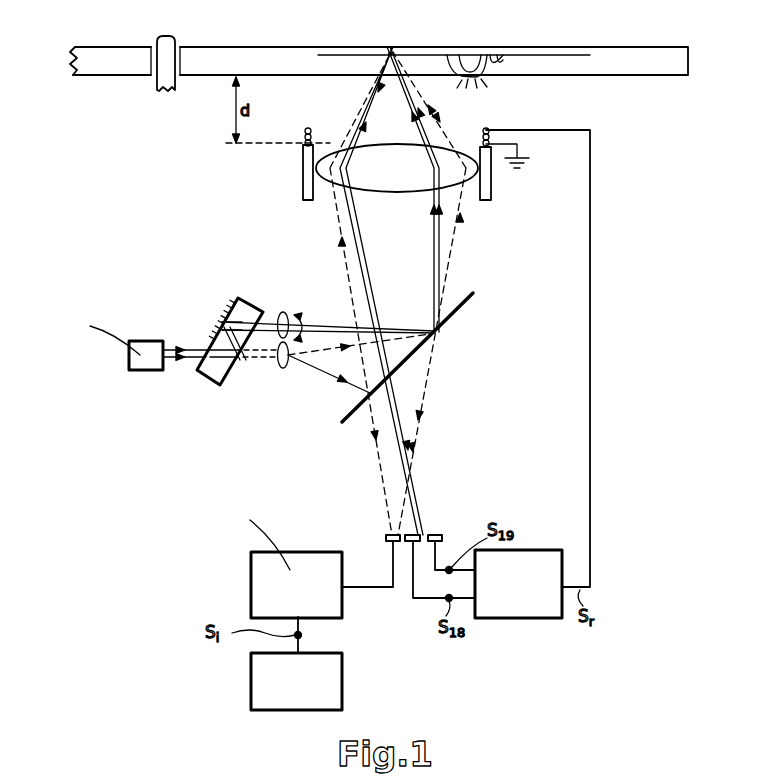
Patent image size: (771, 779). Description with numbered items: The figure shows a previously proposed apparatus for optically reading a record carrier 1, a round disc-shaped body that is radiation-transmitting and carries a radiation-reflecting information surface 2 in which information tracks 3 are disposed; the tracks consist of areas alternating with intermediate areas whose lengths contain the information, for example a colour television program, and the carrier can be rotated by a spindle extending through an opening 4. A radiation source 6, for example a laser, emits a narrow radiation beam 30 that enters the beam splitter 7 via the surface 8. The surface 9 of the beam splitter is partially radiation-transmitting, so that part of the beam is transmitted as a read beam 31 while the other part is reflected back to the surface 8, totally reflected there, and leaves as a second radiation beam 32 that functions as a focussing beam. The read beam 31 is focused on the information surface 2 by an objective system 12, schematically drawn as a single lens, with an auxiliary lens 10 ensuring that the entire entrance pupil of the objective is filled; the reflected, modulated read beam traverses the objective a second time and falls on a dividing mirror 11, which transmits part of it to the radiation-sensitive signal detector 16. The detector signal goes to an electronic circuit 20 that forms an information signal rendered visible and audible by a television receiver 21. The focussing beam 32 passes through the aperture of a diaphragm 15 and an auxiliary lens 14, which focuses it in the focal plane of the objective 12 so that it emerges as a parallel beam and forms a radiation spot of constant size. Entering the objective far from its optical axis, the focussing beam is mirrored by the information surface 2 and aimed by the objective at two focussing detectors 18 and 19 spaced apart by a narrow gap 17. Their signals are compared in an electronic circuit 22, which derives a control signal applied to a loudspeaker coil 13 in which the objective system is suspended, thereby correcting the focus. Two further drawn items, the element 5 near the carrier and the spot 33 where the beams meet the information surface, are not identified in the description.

The record carrier / tape 1 is at (655, 64).
The information track 2 is at (568, 57).
The recorded pits / information areas 3 is at (475, 81).
The gap of write head 4 is at (180, 62).
The write head 5 is at (165, 45).
The laser 6 is at (143, 341).
The acousto-optic deflector crystal 7 is at (212, 409).
The transducer 8 is at (205, 341).
The acoustic absorber 9 is at (232, 373).
The lens 10 is at (283, 369).
The semi-transparent mirror 11 is at (468, 300).
The objective lens 12 is at (458, 186).
The electrodes / actuating coils 13 is at (303, 191).
The lens 14 is at (281, 313).
The deflection direction 15 is at (303, 314).
The detector assembly 16 is at (409, 563).
The detector 17 is at (415, 542).
The detector 18 is at (397, 542).
The detector 19 is at (442, 537).
The video electronic circuit 20 is at (252, 568).
The television receiver 21 is at (252, 690).
The autofocus circuit 22 is at (522, 619).
The laser beam 30 is at (172, 354).
The reading beam 31 is at (311, 351).
The focusing / auxiliary beam 32 is at (340, 323).
The focal spot 33 is at (390, 52).